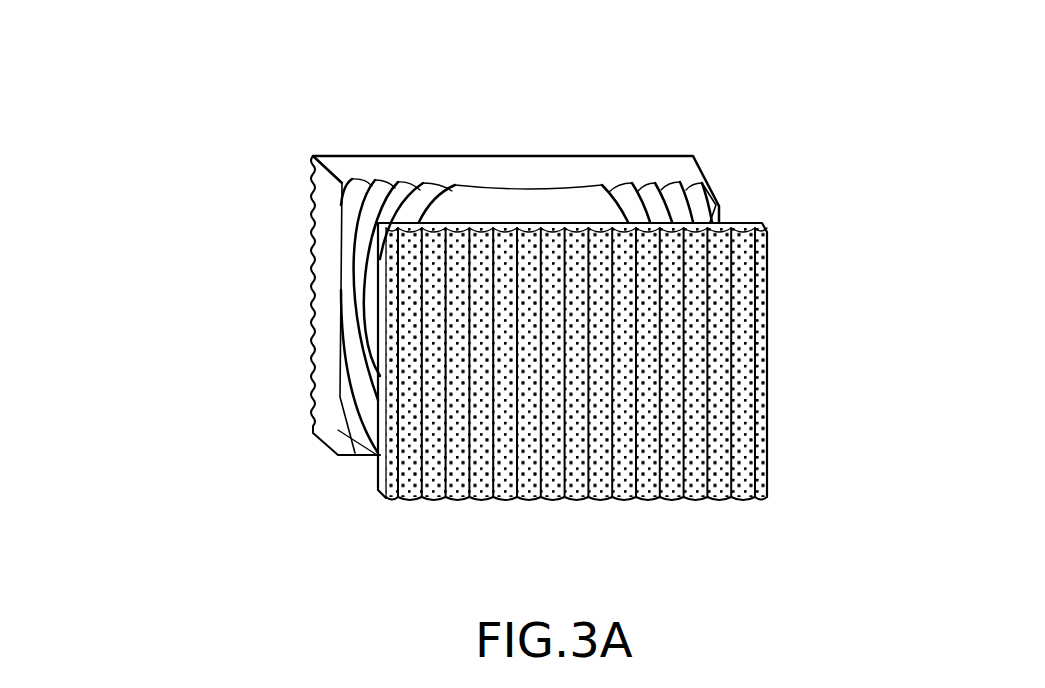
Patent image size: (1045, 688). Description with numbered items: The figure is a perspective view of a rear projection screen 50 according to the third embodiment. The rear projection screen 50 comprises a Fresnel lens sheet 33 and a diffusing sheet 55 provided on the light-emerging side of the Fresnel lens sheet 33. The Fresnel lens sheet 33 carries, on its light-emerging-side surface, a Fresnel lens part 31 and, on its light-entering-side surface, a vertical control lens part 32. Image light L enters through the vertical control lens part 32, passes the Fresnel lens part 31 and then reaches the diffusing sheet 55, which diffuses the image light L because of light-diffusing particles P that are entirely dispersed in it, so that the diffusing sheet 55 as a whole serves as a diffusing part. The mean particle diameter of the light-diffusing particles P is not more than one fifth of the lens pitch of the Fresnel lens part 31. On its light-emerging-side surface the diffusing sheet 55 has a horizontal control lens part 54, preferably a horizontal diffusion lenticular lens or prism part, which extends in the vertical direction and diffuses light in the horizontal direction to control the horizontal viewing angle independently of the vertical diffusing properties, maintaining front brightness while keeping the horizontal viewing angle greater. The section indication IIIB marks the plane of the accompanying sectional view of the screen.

The rear projection screen 50 is at (713, 138).
The Fresnel lens sheet 33 is at (242, 247).
The vertical control lens part 32 is at (312, 278).
The Fresnel lens part 31 is at (353, 322).
The diffusing sheet 55 is at (355, 497).
The horizontal control lens part 54 is at (460, 500).
The light-diffusing particles P is at (573, 473).
The image light L is at (335, 130).
The section line IIIB is at (180, 317).